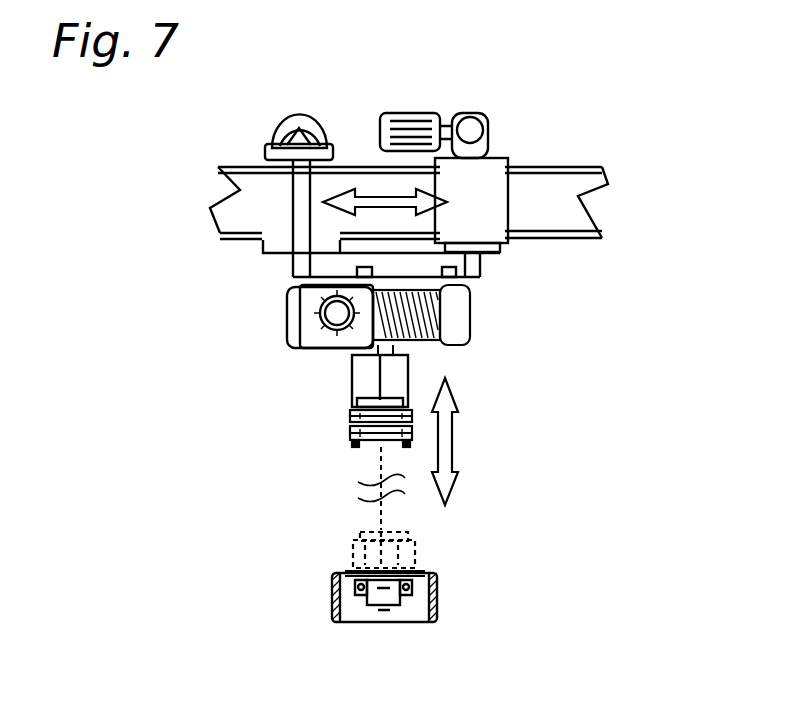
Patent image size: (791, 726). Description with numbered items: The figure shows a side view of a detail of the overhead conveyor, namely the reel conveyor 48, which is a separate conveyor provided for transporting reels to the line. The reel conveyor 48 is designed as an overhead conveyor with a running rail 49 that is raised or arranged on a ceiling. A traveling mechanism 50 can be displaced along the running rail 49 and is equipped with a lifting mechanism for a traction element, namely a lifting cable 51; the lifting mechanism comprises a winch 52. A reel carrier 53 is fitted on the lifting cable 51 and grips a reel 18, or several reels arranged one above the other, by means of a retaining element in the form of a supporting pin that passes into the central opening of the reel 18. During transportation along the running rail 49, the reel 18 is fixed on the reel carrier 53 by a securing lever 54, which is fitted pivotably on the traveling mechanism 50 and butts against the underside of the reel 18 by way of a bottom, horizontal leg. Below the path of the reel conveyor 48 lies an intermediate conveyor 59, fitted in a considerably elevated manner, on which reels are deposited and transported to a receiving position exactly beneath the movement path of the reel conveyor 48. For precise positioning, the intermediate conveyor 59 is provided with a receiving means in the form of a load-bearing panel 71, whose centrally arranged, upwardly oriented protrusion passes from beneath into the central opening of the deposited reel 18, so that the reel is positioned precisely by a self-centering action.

The running rail 49 is at (563, 178).
The traveling mechanism 50 is at (257, 272).
The reel conveyor 48 is at (150, 412).
The winch 52 is at (440, 303).
The lifting cable 51 is at (417, 343).
The securing lever 54 is at (352, 372).
The reel carrier 53 is at (350, 404).
The reel 18 is at (397, 433).
The load-bearing panel 71 is at (353, 570).
The intermediate conveyor 59 is at (425, 640).